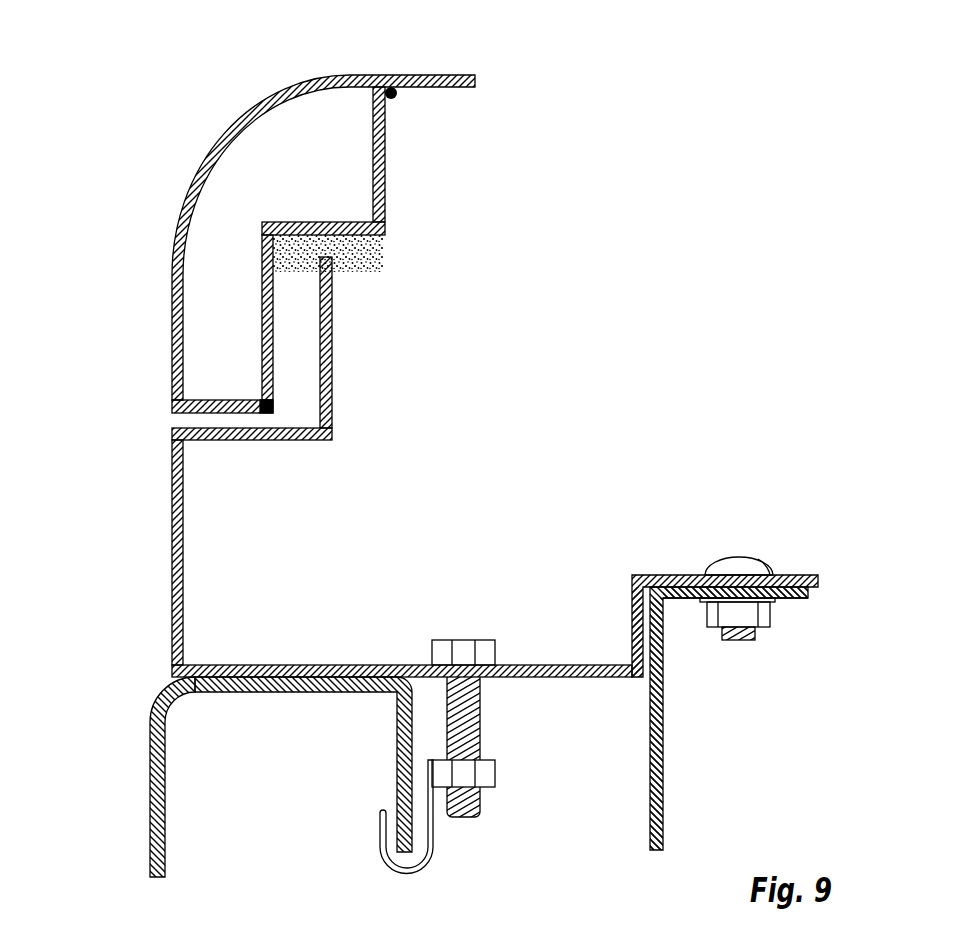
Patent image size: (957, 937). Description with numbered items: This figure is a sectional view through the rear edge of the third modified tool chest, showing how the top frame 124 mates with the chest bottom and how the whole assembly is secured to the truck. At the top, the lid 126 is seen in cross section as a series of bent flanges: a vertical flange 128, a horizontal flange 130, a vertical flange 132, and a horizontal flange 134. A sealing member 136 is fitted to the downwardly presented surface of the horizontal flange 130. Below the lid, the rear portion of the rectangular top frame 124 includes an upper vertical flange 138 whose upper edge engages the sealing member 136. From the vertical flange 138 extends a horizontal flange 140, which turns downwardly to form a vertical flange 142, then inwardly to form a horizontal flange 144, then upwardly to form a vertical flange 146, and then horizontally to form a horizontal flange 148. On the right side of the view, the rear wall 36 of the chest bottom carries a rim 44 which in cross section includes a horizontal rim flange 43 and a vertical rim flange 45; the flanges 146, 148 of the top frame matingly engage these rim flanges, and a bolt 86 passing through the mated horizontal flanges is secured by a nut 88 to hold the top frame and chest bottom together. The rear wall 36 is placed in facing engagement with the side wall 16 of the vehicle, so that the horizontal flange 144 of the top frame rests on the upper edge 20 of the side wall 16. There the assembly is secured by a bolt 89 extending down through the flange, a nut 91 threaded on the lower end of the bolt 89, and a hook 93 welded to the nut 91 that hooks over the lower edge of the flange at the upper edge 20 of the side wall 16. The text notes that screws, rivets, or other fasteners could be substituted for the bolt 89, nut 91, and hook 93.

The side wall 16 is at (148, 752).
The upper edge 20 is at (358, 693).
The rear wall 36 is at (668, 807).
The horizontal rim flange 43 is at (788, 598).
The rim 44 is at (816, 603).
The vertical rim flange 45 is at (663, 733).
The bolt 86 is at (758, 560).
The nut 88 is at (740, 620).
The bolt 89 is at (463, 640).
The nut 91 is at (495, 775).
The hook 93 is at (418, 867).
The top frame 124 is at (152, 468).
The lid 126 is at (348, 73).
The vertical flange 128 is at (385, 140).
The horizontal flange 130 is at (332, 222).
The vertical flange 132 is at (260, 300).
The horizontal flange 134 is at (238, 400).
The sealing member 136 is at (383, 257).
The vertical flange 138 is at (332, 377).
The horizontal flange 140 is at (243, 440).
The vertical flange 142 is at (182, 582).
The horizontal flange 144 is at (232, 663).
The vertical flange 146 is at (632, 600).
The horizontal flange 148 is at (688, 575).